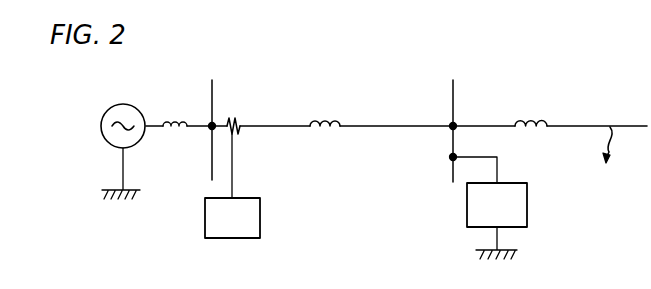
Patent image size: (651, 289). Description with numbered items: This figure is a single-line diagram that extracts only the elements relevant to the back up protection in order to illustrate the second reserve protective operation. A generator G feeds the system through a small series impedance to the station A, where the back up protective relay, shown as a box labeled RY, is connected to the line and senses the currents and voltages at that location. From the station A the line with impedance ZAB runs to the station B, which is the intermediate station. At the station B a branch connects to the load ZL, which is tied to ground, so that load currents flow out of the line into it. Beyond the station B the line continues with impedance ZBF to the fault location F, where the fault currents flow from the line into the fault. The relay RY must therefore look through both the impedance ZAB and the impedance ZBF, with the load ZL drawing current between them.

The generator G is at (110, 104).
The station A is at (209, 116).
The station B is at (450, 118).
The fault location F is at (613, 126).
The back up protective relay RY is at (232, 178).
The impedance of the line from station A to station B ZAB is at (331, 107).
The impedance of the line from station B to the fault location ZBF is at (528, 108).
The load ZL is at (490, 208).